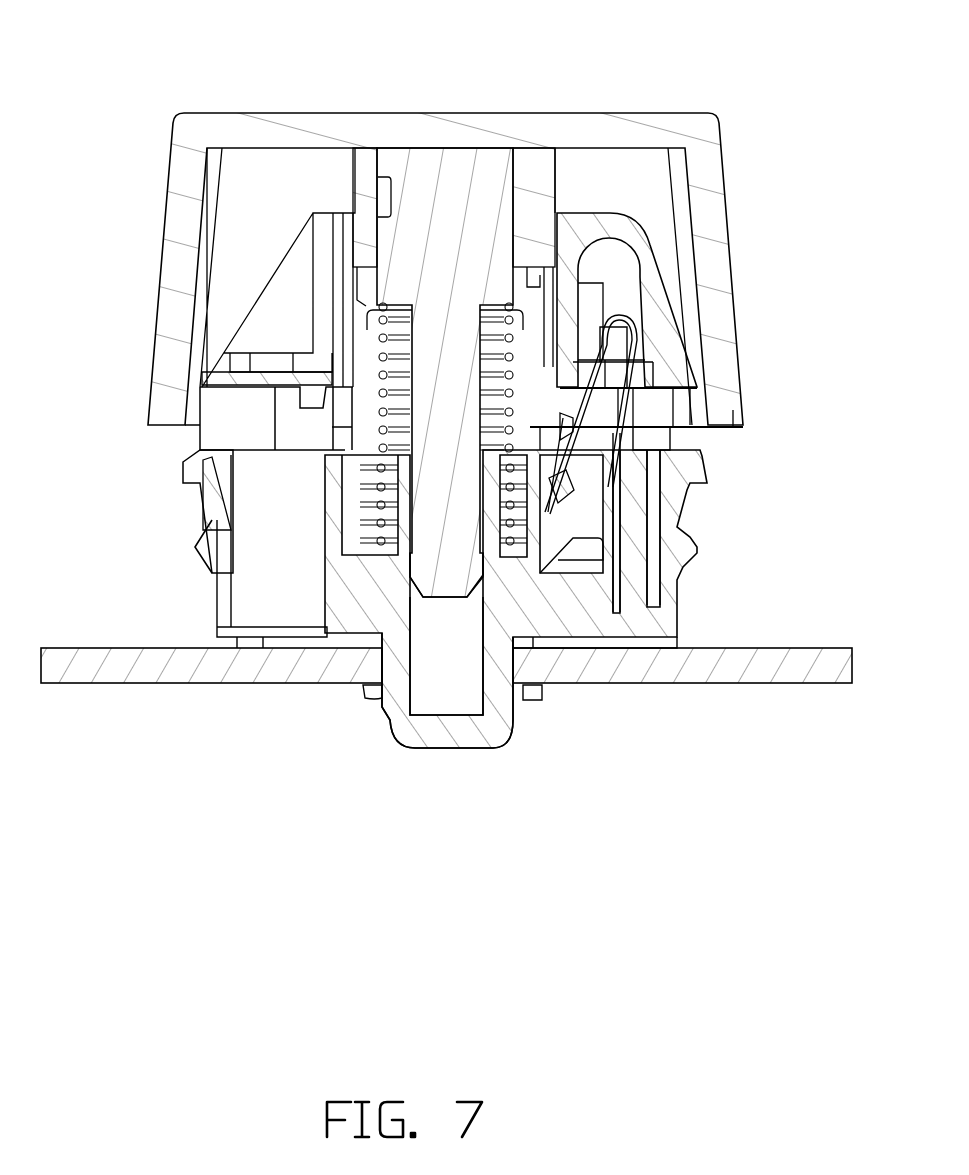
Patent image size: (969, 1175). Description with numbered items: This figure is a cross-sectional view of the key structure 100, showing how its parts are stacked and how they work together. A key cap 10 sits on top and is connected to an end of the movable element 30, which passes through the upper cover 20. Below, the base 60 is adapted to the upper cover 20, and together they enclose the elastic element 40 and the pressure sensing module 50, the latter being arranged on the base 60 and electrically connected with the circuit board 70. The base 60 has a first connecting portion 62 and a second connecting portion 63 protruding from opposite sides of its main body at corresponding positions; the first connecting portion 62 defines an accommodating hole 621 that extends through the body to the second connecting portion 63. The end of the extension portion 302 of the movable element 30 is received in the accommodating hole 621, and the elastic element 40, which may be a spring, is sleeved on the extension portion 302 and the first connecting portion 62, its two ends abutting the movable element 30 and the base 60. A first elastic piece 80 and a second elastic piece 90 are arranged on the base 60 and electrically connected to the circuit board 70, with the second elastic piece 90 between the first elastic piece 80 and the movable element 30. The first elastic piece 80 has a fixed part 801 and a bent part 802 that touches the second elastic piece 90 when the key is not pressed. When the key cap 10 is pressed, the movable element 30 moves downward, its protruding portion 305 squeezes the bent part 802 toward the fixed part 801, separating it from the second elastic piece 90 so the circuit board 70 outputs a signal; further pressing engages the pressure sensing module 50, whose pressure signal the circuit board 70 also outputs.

The key structure 100 is at (388, 68).
The key cap 10 is at (603, 128).
The upper cover 20 is at (613, 226).
The movable element 30 is at (447, 338).
The extension portion 302 is at (440, 577).
The protruding portion 305 is at (580, 472).
The elastic element 40 is at (375, 505).
The pressure sensing module 50 is at (360, 553).
The base 60 is at (672, 553).
The first connecting portion 62 is at (377, 505).
The second connecting portion 63 is at (412, 725).
The accommodating hole 621 is at (458, 678).
The circuit board 70 is at (797, 662).
The first elastic piece 80 is at (615, 590).
The fixed part 801 is at (600, 506).
The bent part 802 is at (573, 373).
The second elastic piece 90 is at (553, 402).